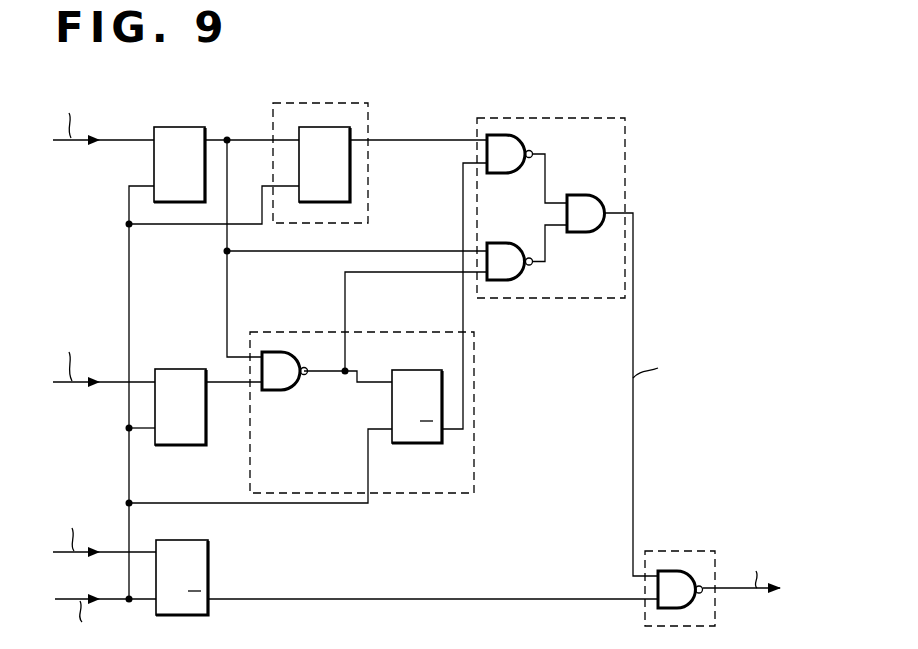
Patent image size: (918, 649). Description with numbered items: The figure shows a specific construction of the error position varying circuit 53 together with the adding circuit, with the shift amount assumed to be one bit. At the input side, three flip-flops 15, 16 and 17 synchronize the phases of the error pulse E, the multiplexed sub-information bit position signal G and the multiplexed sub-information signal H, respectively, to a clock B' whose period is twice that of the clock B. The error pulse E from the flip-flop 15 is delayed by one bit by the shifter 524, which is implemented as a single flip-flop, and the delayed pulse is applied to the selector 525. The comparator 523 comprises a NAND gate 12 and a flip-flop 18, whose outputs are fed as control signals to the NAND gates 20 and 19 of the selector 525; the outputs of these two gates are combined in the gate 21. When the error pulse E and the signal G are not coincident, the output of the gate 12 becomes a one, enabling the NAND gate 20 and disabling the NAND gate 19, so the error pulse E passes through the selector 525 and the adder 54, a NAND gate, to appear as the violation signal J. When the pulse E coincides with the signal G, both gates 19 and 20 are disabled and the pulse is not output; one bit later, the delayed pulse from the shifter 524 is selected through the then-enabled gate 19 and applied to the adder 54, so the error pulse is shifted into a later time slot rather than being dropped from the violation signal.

The error position varying circuit 53 is at (58, 467).
The flip-flop 15 is at (171, 127).
The flip-flop 16 is at (190, 369).
The flip-flop 17 is at (204, 540).
The flip-flop 18 is at (428, 443).
The NAND gate 12 is at (300, 363).
The NAND gate 19 is at (524, 149).
The NAND gate 20 is at (506, 243).
The AND gate 21 is at (578, 195).
The shifter 524 is at (273, 103).
The selector 525 is at (477, 118).
The comparator 523 is at (474, 370).
The adder 54 is at (650, 551).